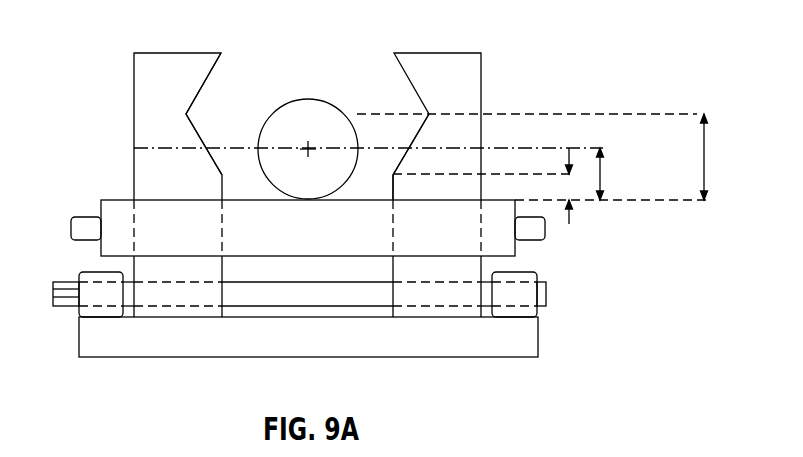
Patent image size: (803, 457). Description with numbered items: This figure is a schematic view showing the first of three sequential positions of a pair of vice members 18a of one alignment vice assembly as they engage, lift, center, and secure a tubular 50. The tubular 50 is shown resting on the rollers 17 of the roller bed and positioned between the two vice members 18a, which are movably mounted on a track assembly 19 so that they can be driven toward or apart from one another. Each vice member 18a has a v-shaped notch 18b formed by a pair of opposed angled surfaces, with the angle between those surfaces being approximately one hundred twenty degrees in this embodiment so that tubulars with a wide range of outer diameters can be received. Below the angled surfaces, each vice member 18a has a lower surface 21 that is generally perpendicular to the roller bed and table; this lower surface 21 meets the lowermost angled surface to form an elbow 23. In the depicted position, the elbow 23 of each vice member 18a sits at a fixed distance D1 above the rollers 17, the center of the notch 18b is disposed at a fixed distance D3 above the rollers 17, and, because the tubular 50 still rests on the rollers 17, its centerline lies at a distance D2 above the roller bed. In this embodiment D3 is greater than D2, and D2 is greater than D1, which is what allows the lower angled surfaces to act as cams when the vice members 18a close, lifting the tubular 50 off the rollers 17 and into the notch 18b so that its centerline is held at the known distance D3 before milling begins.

The roller 17 is at (118, 208).
The vice member 18a is at (178, 53).
The v-shaped notch 18b is at (188, 113).
The track assembly 19 is at (92, 332).
The lower surface 21 is at (393, 188).
The elbow 23 is at (392, 175).
The tubular 50 is at (308, 98).
The fixed distance D1 is at (571, 215).
The distance D2 is at (603, 176).
The fixed distance D3 is at (706, 158).